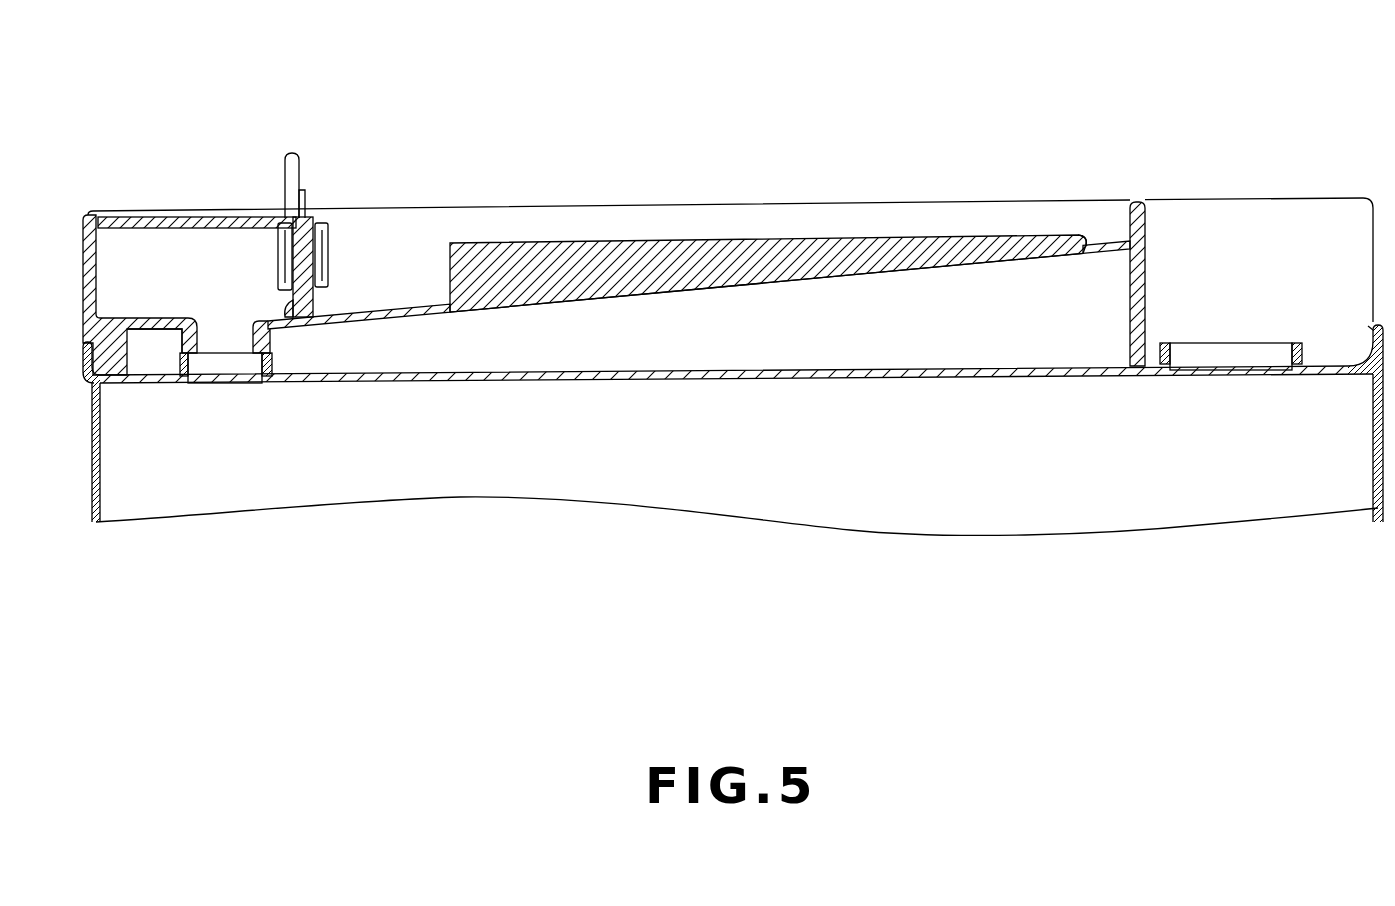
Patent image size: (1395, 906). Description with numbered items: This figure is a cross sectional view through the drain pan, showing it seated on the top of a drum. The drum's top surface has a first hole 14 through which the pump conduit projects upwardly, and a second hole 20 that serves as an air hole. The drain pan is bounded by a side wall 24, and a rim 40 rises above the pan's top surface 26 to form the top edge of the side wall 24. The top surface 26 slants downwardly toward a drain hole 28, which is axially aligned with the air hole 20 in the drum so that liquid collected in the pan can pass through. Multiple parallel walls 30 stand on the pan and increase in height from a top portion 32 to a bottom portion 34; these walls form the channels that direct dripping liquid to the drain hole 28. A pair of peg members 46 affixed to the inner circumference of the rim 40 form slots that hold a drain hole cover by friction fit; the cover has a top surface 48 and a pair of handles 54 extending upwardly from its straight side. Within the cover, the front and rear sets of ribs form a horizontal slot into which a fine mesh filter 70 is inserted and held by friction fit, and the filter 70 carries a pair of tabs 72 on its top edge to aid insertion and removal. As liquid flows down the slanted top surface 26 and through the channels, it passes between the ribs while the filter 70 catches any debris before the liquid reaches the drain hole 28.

The first hole 14 is at (1233, 358).
The second hole 20 is at (242, 372).
The side wall 24 is at (80, 262).
The top surface 26 is at (395, 308).
The drain hole 28 is at (206, 343).
The parallel walls 30 is at (780, 267).
The top portion 32 is at (1073, 237).
The bottom portion 34 is at (500, 262).
The rim 40 is at (88, 204).
The peg members 46 is at (330, 250).
The top surface 48 is at (172, 216).
The handles 54 is at (292, 152).
The fine mesh filter 70 is at (288, 318).
The tabs 72 is at (306, 193).